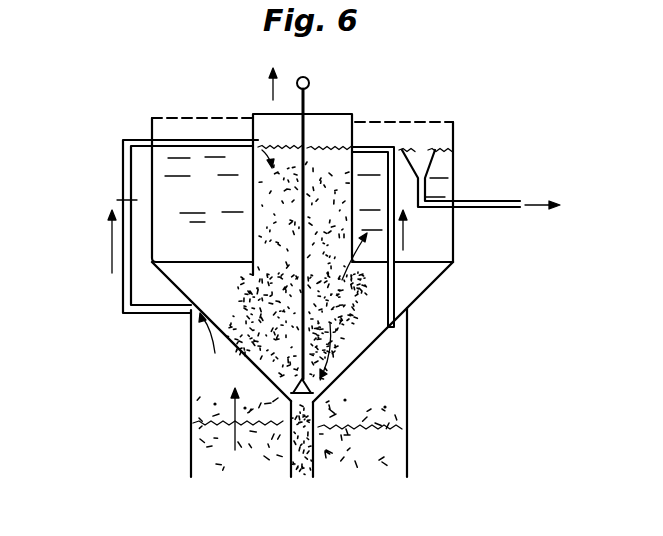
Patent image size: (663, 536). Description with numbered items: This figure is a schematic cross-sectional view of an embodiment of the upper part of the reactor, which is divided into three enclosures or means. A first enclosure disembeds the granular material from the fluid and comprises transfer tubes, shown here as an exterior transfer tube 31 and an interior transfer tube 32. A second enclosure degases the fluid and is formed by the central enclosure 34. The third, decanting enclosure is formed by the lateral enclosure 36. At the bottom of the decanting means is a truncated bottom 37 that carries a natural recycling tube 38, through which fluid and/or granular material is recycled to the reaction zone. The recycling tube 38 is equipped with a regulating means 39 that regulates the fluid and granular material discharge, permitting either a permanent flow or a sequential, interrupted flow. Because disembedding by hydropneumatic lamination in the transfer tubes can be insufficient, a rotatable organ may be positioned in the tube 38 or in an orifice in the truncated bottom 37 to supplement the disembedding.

The exterior transfer tube 31 is at (126, 166).
The interior transfer tube 32 is at (393, 198).
The central enclosure 34 is at (270, 219).
The lateral enclosure 36 is at (353, 292).
The truncated bottom 37 is at (357, 362).
The natural recycling tube 38 is at (313, 438).
The regulating means 39 is at (280, 384).